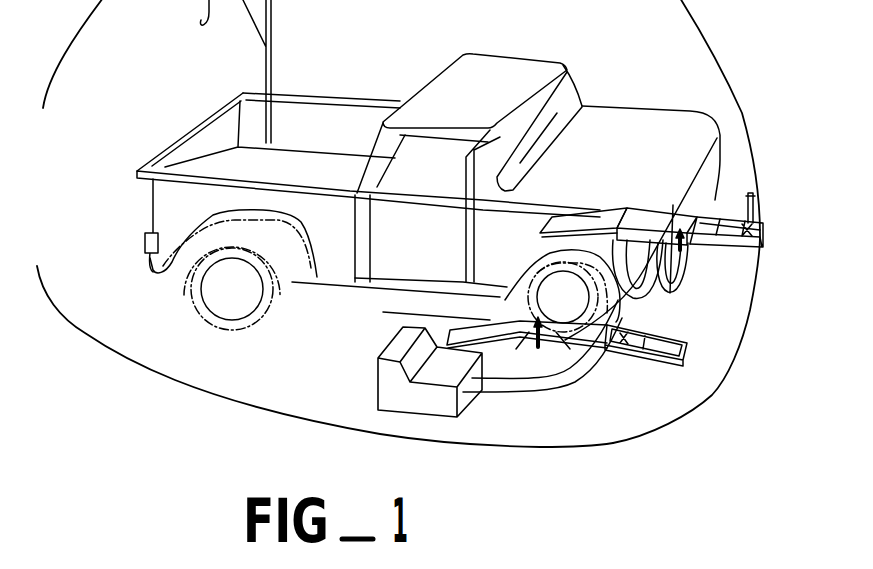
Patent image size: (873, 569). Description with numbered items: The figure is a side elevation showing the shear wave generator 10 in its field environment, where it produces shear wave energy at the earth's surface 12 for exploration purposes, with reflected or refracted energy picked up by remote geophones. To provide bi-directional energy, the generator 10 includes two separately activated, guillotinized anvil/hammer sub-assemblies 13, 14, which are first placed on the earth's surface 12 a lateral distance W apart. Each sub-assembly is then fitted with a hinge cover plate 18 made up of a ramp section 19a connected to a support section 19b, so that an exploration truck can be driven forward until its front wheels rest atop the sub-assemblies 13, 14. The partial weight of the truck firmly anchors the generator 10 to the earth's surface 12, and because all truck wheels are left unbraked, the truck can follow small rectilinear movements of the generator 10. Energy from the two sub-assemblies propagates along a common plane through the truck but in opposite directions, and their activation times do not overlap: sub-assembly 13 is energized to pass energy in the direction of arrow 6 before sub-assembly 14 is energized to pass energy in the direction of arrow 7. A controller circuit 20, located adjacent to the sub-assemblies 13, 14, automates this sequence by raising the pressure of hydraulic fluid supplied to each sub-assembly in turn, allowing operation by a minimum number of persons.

The arrow 6 is at (645, 412).
The arrow 7 is at (451, 175).
The shear wave generator 10 is at (555, 272).
The earth's surface 12 is at (565, 432).
The guillotinized anvil/hammer sub-assembly 13 is at (698, 367).
The guillotinized anvil/hammer sub-assembly 14 is at (752, 253).
The hinge cover plate 18 is at (617, 325).
The ramp section 19a is at (592, 213).
The support section 19b is at (590, 249).
The controller circuit 20 is at (376, 392).
The lateral distance W is at (692, 350).